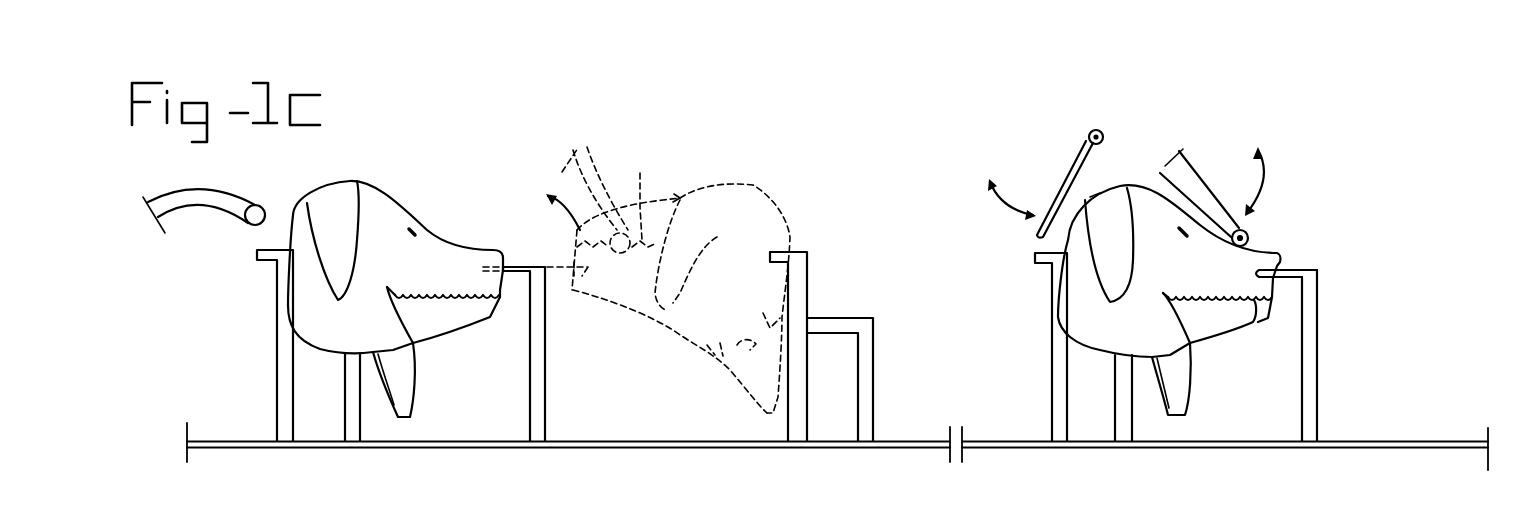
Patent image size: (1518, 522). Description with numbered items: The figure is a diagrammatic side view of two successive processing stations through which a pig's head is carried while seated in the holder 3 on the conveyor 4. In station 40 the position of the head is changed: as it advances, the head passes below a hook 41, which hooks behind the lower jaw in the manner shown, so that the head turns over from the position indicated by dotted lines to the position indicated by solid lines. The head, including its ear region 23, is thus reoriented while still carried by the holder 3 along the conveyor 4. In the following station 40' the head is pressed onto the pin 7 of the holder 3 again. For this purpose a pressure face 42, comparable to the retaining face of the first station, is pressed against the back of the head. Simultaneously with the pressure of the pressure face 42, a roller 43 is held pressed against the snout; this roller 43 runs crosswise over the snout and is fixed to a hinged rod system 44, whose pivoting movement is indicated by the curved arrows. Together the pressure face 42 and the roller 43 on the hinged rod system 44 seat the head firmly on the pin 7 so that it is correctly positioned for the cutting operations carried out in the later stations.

The holder 3 is at (1321, 371).
The conveyor 4 is at (826, 448).
The pin 7 is at (520, 266).
The ear 23 is at (320, 268).
The station 40 is at (466, 256).
The station 40' is at (1145, 159).
The hook 41 is at (220, 208).
The pressure face 42 is at (1069, 177).
The roller 43 is at (1250, 234).
The hinged rod system 44 is at (1196, 188).